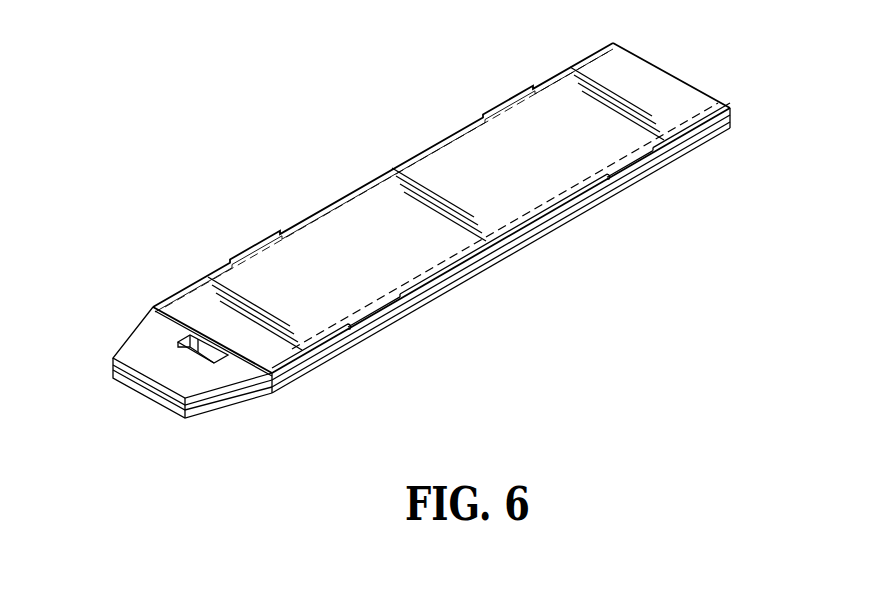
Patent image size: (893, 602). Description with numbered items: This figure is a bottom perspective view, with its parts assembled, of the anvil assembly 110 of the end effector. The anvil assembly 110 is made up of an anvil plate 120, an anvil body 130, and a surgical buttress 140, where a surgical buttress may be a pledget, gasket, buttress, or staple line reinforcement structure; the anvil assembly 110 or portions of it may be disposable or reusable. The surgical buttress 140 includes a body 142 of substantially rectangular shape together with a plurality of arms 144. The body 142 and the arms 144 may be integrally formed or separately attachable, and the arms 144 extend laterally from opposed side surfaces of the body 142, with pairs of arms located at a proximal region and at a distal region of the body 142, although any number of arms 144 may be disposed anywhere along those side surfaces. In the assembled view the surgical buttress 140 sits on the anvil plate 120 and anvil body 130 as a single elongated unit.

The anvil assembly 110 is at (250, 172).
The anvil plate 120 is at (146, 343).
The anvil body 130 is at (227, 407).
The surgical buttress 140 is at (647, 92).
The body 142 is at (463, 152).
The arms 144 is at (632, 176).